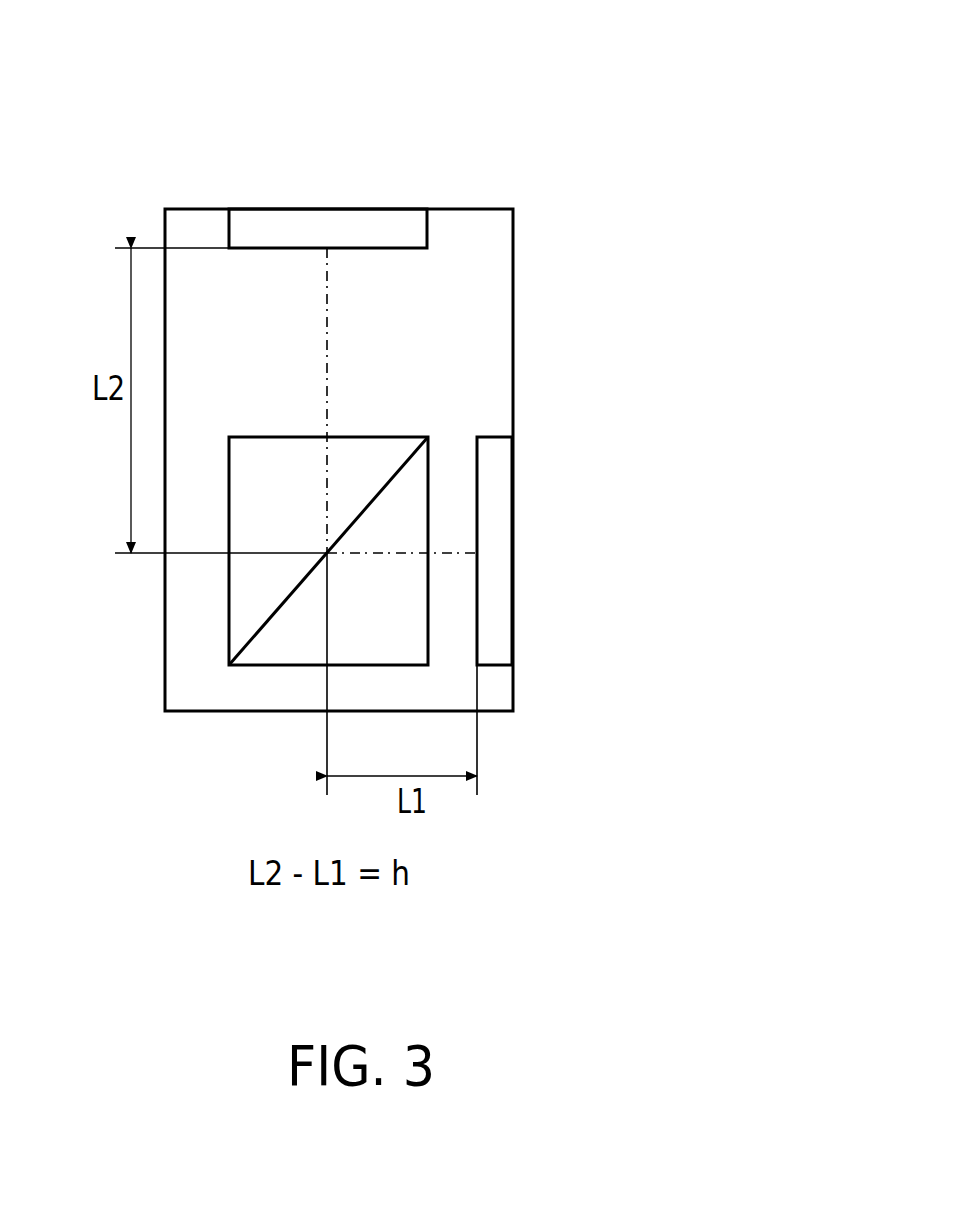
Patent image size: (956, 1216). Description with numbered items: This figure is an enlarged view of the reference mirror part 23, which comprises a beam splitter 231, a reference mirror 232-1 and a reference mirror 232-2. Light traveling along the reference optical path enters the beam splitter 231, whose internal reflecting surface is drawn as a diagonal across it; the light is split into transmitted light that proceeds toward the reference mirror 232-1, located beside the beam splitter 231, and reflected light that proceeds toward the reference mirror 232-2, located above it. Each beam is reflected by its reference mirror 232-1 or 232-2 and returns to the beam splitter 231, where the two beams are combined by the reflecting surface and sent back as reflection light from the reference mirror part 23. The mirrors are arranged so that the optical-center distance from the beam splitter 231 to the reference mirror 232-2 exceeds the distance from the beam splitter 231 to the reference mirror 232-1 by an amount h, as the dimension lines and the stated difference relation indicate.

The reference mirror part 23 is at (336, 41).
The beam splitter 231 is at (243, 667).
The reference mirror 232-1 is at (495, 667).
The reference mirror 232-2 is at (427, 231).